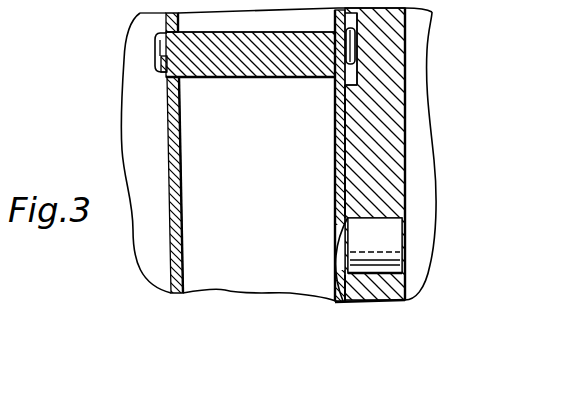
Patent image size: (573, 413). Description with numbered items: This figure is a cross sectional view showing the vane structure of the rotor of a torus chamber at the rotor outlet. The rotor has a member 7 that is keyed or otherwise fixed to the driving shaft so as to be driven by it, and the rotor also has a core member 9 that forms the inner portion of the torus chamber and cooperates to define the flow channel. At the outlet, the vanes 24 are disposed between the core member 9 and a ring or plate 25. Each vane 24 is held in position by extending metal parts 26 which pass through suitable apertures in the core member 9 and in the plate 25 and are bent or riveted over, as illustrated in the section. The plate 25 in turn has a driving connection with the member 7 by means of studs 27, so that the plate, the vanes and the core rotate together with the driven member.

The member 7 is at (393, 164).
The core member 9 is at (168, 134).
The vanes 24 is at (240, 80).
The ring or plate 25 is at (348, 135).
The extending metal parts 26 is at (167, 43).
The studs 27 is at (392, 246).